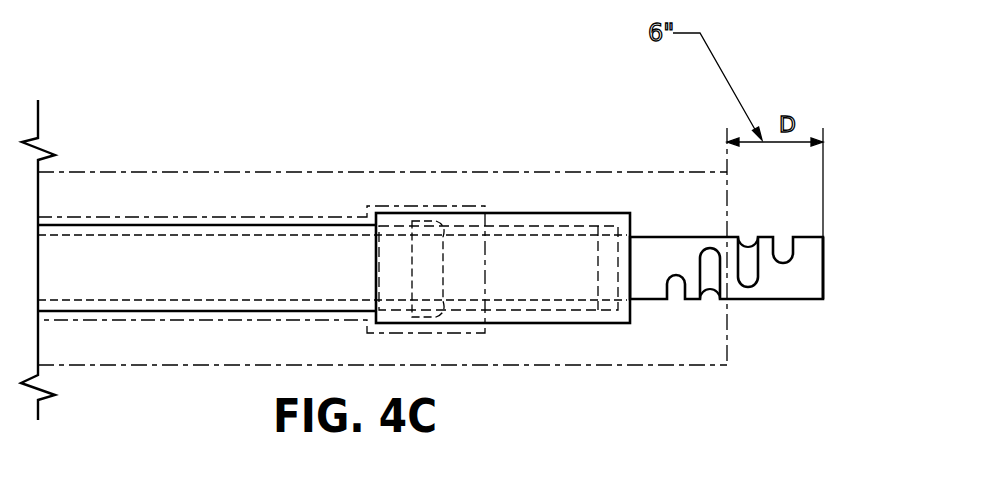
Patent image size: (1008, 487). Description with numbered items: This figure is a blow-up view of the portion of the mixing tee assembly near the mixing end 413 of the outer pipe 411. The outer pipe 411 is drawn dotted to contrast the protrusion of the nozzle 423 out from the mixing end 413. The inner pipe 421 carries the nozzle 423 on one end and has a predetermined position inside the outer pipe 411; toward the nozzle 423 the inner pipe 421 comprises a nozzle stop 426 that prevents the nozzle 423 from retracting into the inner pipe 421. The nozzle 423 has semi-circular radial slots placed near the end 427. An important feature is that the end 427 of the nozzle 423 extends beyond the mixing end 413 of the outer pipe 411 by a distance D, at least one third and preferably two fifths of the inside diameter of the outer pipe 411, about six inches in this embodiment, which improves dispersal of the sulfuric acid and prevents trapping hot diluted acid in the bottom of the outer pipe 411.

The outer pipe 411 is at (380, 182).
The mixing end 413 is at (740, 353).
The inner pipe 421 is at (320, 220).
The nozzle 423 is at (797, 290).
The nozzle stop 426 is at (607, 312).
The end of nozzle 427 is at (828, 248).